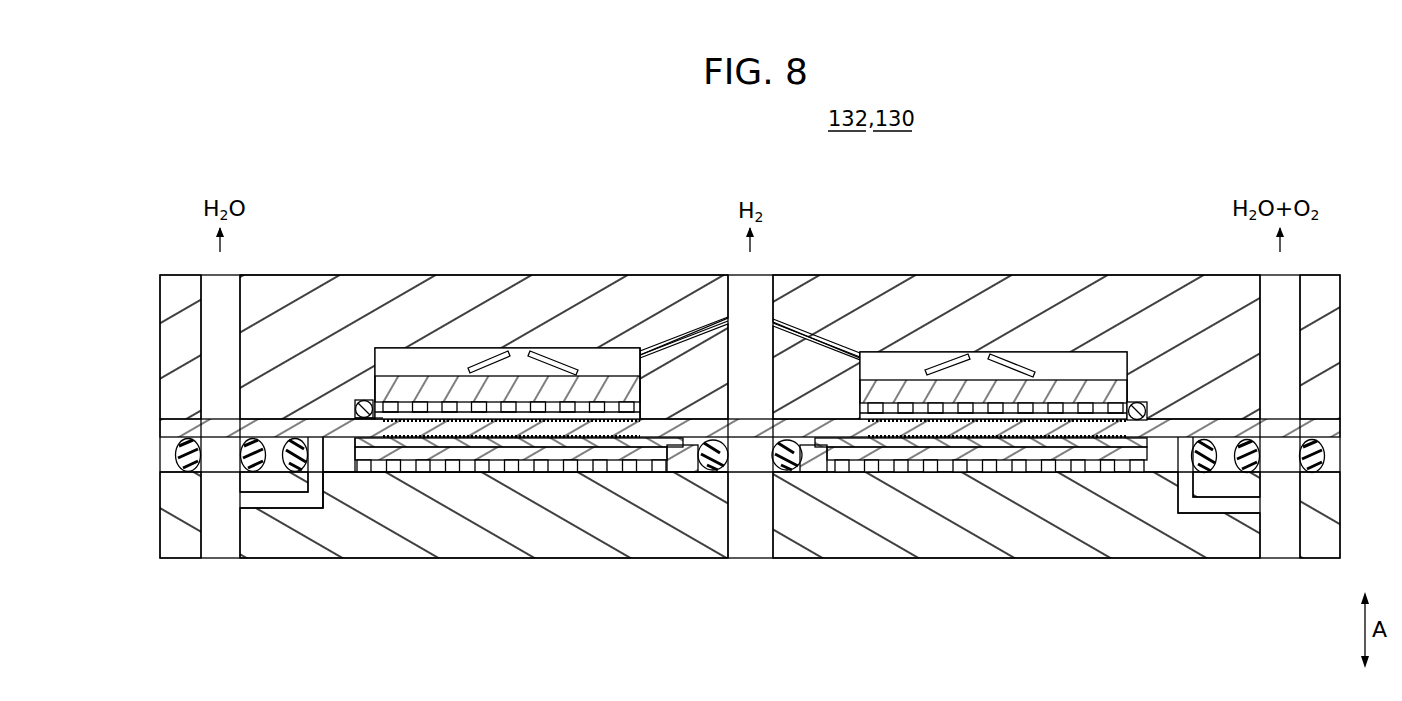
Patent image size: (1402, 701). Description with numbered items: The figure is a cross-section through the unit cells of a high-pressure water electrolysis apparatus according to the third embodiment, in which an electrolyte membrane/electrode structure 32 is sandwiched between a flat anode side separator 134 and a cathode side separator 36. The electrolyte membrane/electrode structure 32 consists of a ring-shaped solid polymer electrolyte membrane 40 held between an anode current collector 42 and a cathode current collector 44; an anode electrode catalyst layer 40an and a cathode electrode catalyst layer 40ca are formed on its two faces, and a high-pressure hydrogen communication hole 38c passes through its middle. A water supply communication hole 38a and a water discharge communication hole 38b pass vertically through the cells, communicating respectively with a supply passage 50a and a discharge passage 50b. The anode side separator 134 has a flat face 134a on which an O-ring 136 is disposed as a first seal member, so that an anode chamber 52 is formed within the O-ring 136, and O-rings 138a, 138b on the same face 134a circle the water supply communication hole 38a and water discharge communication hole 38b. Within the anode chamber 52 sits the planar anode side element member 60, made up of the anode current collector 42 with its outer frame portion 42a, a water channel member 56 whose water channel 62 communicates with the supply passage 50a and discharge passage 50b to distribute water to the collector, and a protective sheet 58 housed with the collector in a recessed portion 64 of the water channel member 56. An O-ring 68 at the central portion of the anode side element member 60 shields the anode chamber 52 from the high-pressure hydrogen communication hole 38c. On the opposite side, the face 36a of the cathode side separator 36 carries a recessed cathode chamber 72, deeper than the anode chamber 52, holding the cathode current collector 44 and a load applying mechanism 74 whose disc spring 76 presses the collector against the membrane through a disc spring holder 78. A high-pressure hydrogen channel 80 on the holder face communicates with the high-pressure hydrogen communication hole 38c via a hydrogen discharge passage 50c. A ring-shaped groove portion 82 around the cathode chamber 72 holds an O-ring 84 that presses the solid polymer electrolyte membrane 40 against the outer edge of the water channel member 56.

The cathode side separator 36 is at (159, 271).
The face of the cathode side separator 36a is at (736, 426).
The electrolyte membrane/electrode structure 32 is at (162, 438).
The water supply communication hole 38a is at (237, 548).
The water discharge communication hole 38b is at (1270, 560).
The high-pressure hydrogen communication hole 38c is at (753, 560).
The solid polymer electrolyte membrane 40 is at (893, 388).
The cathode electrode catalyst layer 40ca is at (1049, 375).
The anode electrode catalyst layer 40an is at (960, 462).
The anode current collector 42 is at (540, 470).
The frame portion 42a is at (361, 462).
The cathode current collector 44 is at (622, 380).
The supply passage 50a is at (297, 510).
The discharge passage 50b is at (1241, 515).
The hydrogen discharge passage 50c is at (689, 332).
The anode chamber 52 is at (428, 462).
The water channel member 56 is at (681, 471).
The protective sheet 58 is at (600, 462).
The anode side element member 60 is at (585, 622).
The water channel 62 is at (514, 472).
The recessed portion 64 is at (583, 406).
The O-ring 68 is at (790, 478).
The cathode chamber 72 is at (406, 349).
The load applying mechanism 74 is at (538, 366).
The disc spring 76 is at (490, 350).
The disc spring holder 78 is at (637, 346).
The high-pressure hydrogen channel 80 is at (445, 388).
The groove portion 82 is at (356, 412).
The O-ring 84 is at (366, 400).
The anode side separator 134 is at (160, 560).
The face of the anode side separator 134a is at (347, 472).
The O-ring 136 is at (290, 437).
The O-ring 138a is at (176, 440).
The O-ring 138b is at (1332, 458).